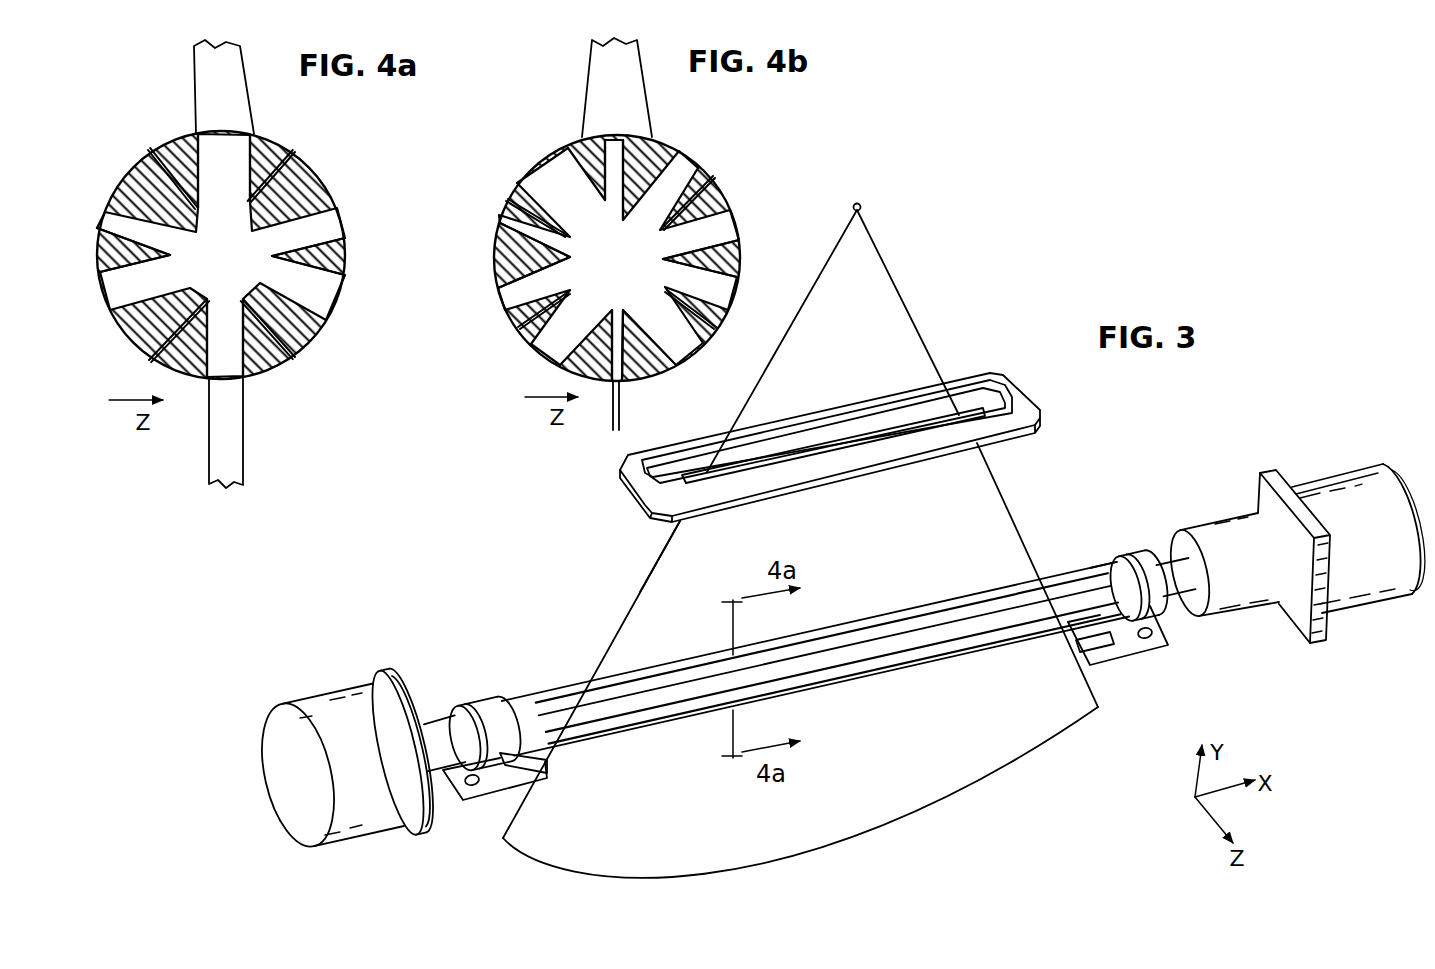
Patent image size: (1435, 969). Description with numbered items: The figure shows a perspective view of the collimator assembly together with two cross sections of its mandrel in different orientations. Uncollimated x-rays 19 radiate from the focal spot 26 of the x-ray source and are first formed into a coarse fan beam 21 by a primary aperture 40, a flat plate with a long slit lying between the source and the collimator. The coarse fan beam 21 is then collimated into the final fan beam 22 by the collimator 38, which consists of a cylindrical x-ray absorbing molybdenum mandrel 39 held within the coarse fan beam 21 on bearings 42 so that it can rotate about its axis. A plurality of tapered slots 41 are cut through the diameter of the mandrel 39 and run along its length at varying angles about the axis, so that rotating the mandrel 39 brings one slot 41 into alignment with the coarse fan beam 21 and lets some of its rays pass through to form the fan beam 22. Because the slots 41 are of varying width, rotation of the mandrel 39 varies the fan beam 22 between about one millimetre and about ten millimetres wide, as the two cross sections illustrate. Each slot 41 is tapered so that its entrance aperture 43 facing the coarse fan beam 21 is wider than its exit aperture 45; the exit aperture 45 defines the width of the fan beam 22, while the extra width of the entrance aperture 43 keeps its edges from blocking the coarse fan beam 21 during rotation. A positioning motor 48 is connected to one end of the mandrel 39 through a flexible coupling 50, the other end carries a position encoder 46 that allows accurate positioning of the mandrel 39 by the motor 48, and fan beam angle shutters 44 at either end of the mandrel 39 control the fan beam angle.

In FIG. 3, the uncollimated x-rays 19 is at (855, 347).
In FIG. 4a, the coarse fan beam 21 is at (234, 101).
In FIG. 4b, the coarse fan beam 21 is at (631, 107).
In FIG. 3, the coarse fan beam 21 is at (863, 523).
In FIG. 4a, the fan beam 22 is at (231, 446).
In FIG. 4b, the fan beam 22 is at (621, 402).
In FIG. 3, the fan beam 22 is at (866, 740).
In FIG. 3, the focal spot 26 is at (862, 208).
In FIG. 4a, the collimator 38 is at (243, 281).
In FIG. 4b, the collimator 38 is at (648, 258).
In FIG. 4a, the mandrel 39 is at (347, 257).
In FIG. 4b, the mandrel 39 is at (742, 259).
In FIG. 3, the mandrel 39 is at (1104, 611).
In FIG. 3, the primary aperture 40 is at (1021, 400).
In FIG. 4a, the tapered slots 41 is at (209, 200).
In FIG. 4b, the tapered slots 41 is at (607, 258).
In FIG. 3, the tapered slots 41 is at (536, 692).
In FIG. 3, the bearings 42 is at (482, 714).
In FIG. 4a, the entrance aperture 43 is at (205, 135).
In FIG. 4b, the entrance aperture 43 is at (614, 260).
In FIG. 3, the fan beam angle shutters 44 is at (482, 804).
In FIG. 4a, the exit aperture 45 is at (141, 151).
In FIG. 4b, the exit aperture 45 is at (611, 252).
In FIG. 3, the position encoder 46 is at (322, 691).
In FIG. 3, the positioning motor 48 is at (1400, 584).
In FIG. 3, the flexible coupling 50 is at (1247, 536).